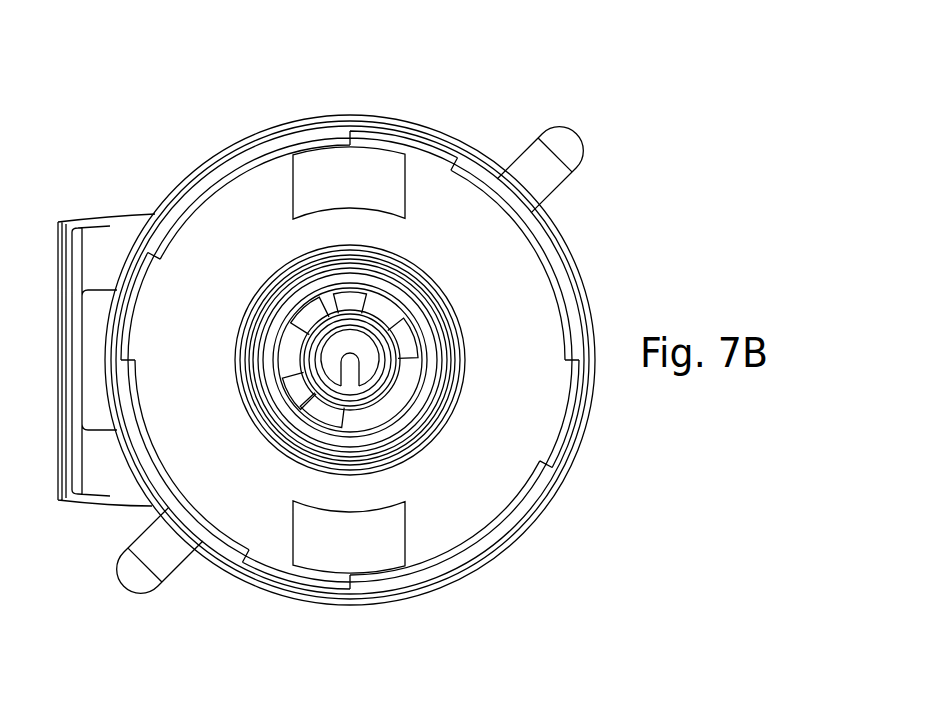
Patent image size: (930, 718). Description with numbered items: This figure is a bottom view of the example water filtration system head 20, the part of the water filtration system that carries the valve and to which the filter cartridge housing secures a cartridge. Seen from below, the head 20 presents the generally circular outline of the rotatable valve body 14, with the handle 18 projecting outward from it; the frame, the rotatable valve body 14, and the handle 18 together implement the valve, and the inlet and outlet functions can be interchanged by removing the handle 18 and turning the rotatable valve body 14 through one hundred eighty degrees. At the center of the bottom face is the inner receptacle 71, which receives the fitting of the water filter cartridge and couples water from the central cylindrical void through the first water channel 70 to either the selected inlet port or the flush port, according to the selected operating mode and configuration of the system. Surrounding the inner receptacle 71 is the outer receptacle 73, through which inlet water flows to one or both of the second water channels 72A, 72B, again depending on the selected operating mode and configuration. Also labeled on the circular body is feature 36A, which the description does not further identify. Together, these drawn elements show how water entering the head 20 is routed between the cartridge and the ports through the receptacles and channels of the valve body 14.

The rotatable valve body 14 is at (573, 463).
The handle 18 is at (573, 149).
The water filtration system head 20 is at (515, 92).
The stepped retaining ring 36A is at (207, 197).
The first water channel 70 is at (362, 347).
The inner receptacle 71 is at (377, 385).
The second water channel 72A is at (378, 312).
The second water channel 72B is at (316, 407).
The outer receptacle 73 is at (365, 447).